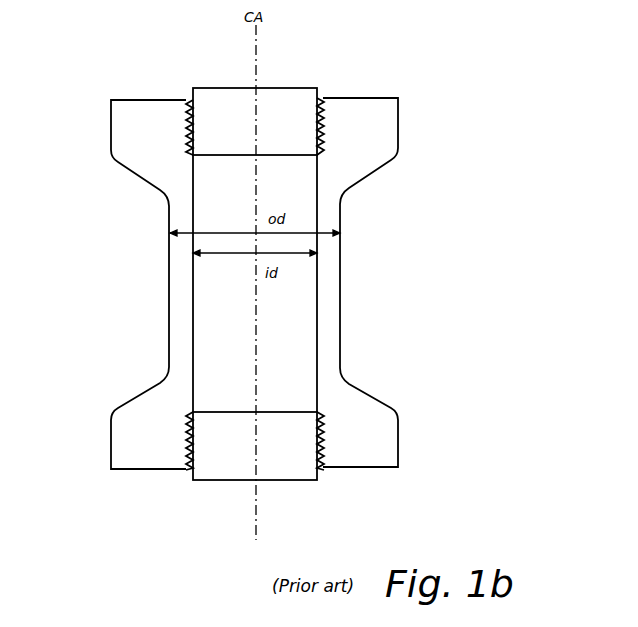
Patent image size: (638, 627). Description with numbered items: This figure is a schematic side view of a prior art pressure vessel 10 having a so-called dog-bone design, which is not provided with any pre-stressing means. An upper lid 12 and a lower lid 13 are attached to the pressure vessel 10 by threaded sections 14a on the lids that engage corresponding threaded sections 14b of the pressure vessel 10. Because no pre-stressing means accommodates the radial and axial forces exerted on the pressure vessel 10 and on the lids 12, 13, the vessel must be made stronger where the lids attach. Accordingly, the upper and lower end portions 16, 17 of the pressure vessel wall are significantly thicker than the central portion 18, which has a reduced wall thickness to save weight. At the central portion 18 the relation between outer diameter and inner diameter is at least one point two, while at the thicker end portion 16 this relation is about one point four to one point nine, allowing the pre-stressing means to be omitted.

The pressure vessel 10 is at (255, 286).
The lid 12 is at (218, 86).
The lid 13 is at (208, 481).
The threaded sections 14a is at (317, 124).
The threaded sections 14b is at (319, 99).
The upper end portion 16 is at (111, 122).
The lower end portion 17 is at (111, 458).
The central portion 18 is at (169, 300).